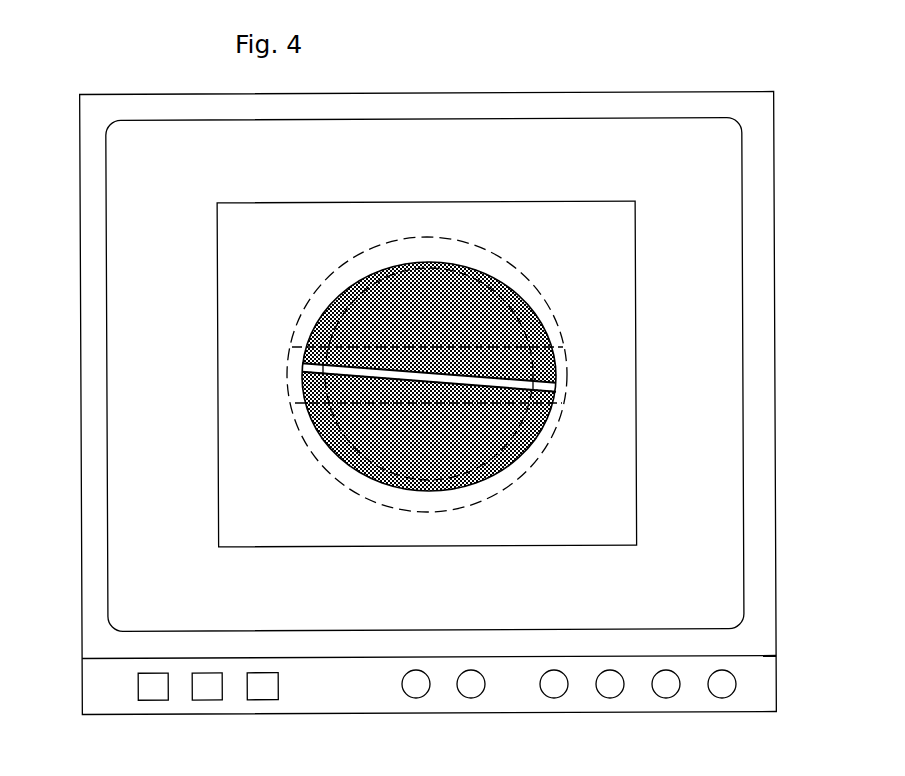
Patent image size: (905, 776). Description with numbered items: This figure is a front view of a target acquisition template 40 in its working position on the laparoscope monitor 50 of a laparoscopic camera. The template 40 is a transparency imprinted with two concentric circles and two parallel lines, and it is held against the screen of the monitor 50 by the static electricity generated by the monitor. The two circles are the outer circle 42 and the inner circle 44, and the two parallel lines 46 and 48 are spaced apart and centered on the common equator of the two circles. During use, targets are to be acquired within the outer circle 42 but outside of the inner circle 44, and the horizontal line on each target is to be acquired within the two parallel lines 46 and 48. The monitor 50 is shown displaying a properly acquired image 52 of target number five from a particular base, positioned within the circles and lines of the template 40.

The laparoscope monitor 50 is at (663, 89).
The target acquisition template 40 is at (635, 248).
The outer circle 42 is at (555, 320).
The inner circle 44 is at (548, 442).
The parallel line 46 is at (402, 348).
The parallel line 48 is at (403, 402).
The acquired image 52 is at (420, 263).